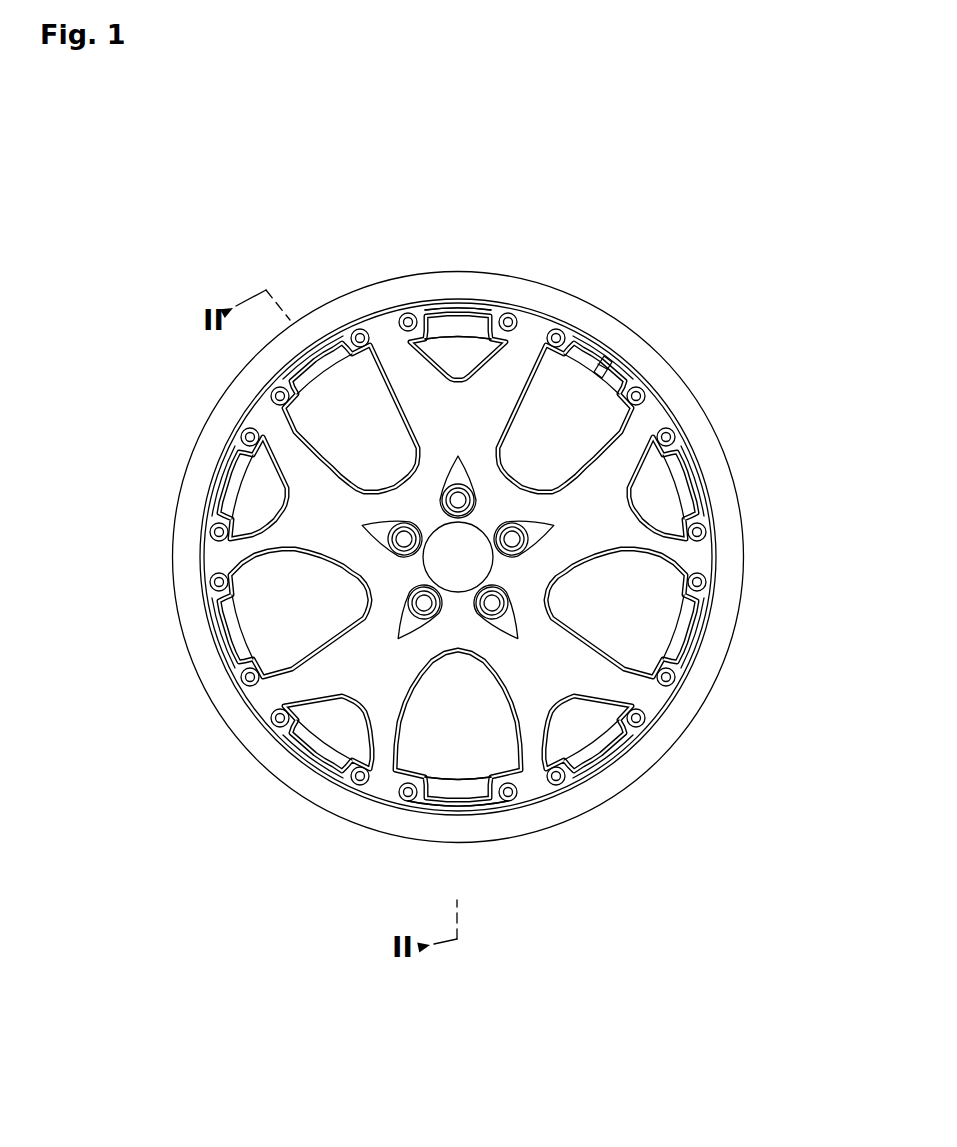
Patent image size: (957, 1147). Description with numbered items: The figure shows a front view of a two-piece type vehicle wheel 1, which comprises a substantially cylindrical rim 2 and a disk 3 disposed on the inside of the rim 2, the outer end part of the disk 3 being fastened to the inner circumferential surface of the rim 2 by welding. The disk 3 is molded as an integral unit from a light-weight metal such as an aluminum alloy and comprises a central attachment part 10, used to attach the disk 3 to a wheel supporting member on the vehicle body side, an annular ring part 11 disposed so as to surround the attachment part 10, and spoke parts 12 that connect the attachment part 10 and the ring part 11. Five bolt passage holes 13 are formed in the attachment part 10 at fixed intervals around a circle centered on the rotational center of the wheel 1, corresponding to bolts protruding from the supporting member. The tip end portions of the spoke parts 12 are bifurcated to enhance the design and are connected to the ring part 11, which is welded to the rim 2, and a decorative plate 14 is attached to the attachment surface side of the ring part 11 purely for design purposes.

The vehicle wheel 1 is at (651, 299).
The rim 2 is at (520, 280).
The disk 3 is at (465, 360).
The attachment part 10 is at (420, 498).
The ring part 11 is at (688, 458).
The spoke parts 12 is at (437, 407).
The bolt passage holes 13 is at (513, 540).
The decorative plate 14 is at (683, 490).